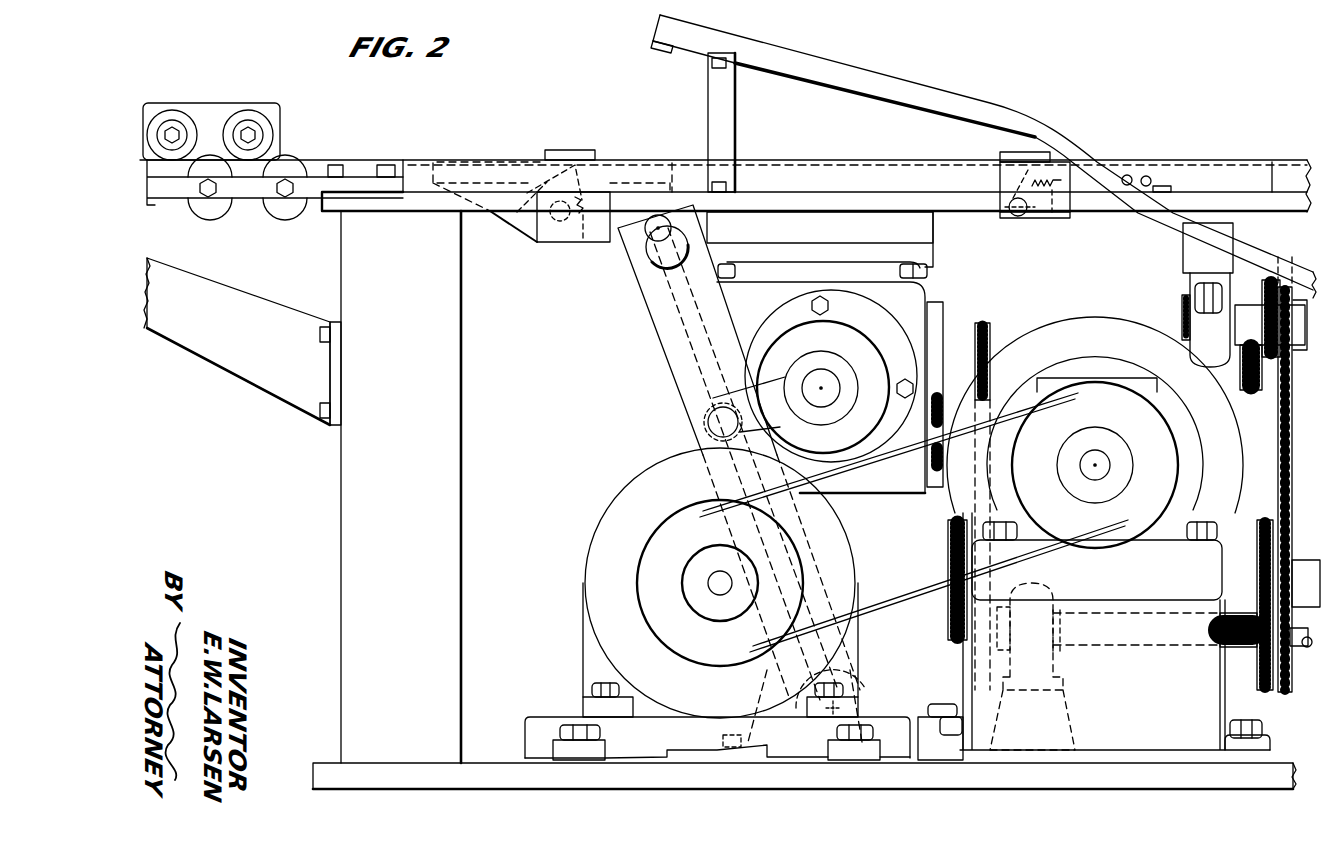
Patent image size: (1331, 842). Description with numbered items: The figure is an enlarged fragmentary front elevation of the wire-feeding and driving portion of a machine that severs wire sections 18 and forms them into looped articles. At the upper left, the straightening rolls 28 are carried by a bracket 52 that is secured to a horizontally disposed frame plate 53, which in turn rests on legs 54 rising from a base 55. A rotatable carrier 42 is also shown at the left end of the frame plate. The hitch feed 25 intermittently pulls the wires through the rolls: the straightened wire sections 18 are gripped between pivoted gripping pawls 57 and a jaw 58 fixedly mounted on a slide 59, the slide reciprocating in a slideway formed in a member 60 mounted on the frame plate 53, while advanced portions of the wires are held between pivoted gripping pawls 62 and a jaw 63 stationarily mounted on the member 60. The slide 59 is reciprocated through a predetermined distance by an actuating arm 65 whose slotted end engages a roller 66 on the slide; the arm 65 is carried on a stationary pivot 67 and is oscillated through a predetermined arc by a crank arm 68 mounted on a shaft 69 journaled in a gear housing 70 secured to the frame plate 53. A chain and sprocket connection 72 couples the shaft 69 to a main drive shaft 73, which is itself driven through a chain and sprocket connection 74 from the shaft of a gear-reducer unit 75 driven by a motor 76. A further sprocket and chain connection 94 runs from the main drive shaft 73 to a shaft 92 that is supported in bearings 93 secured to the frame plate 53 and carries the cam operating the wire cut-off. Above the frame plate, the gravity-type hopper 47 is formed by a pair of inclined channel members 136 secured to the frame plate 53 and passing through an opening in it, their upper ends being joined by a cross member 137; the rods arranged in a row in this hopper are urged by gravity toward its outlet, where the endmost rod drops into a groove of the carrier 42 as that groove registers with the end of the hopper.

The wire section 18 is at (361, 160).
The hitch feed 25 is at (541, 158).
The straightening rolls 28 is at (216, 158).
The rotatable carrier 42 is at (177, 190).
The gravity-type hopper 47 is at (937, 88).
The bracket 52 is at (282, 134).
The frame plate 53 is at (338, 199).
The legs 54 is at (437, 423).
The base 55 is at (481, 770).
The pivoted gripping pawls 57 is at (507, 206).
The jaw 58 is at (577, 150).
The slide 59 is at (561, 232).
The member 60 is at (693, 173).
The pivoted gripping pawls 62 is at (1023, 216).
The jaw 63 is at (1003, 158).
The actuating arm 65 is at (663, 367).
The roller 66 is at (655, 236).
The stationary pivot 67 is at (835, 708).
The crank arm 68 is at (770, 383).
The shaft 69 is at (823, 398).
The gear housing 70 is at (908, 300).
The chain and sprocket connection 72 is at (977, 327).
The main drive shaft 73 is at (1157, 642).
The chain and sprocket connection 74 is at (1266, 693).
The gear-reducer unit 75 is at (1132, 383).
The motor 76 is at (607, 547).
The shaft 92 is at (1257, 325).
The bearings 93 is at (1192, 277).
The sprocket and chain connection 94 is at (1278, 432).
The inclined channel members 136 is at (867, 95).
The cross member 137 is at (663, 42).